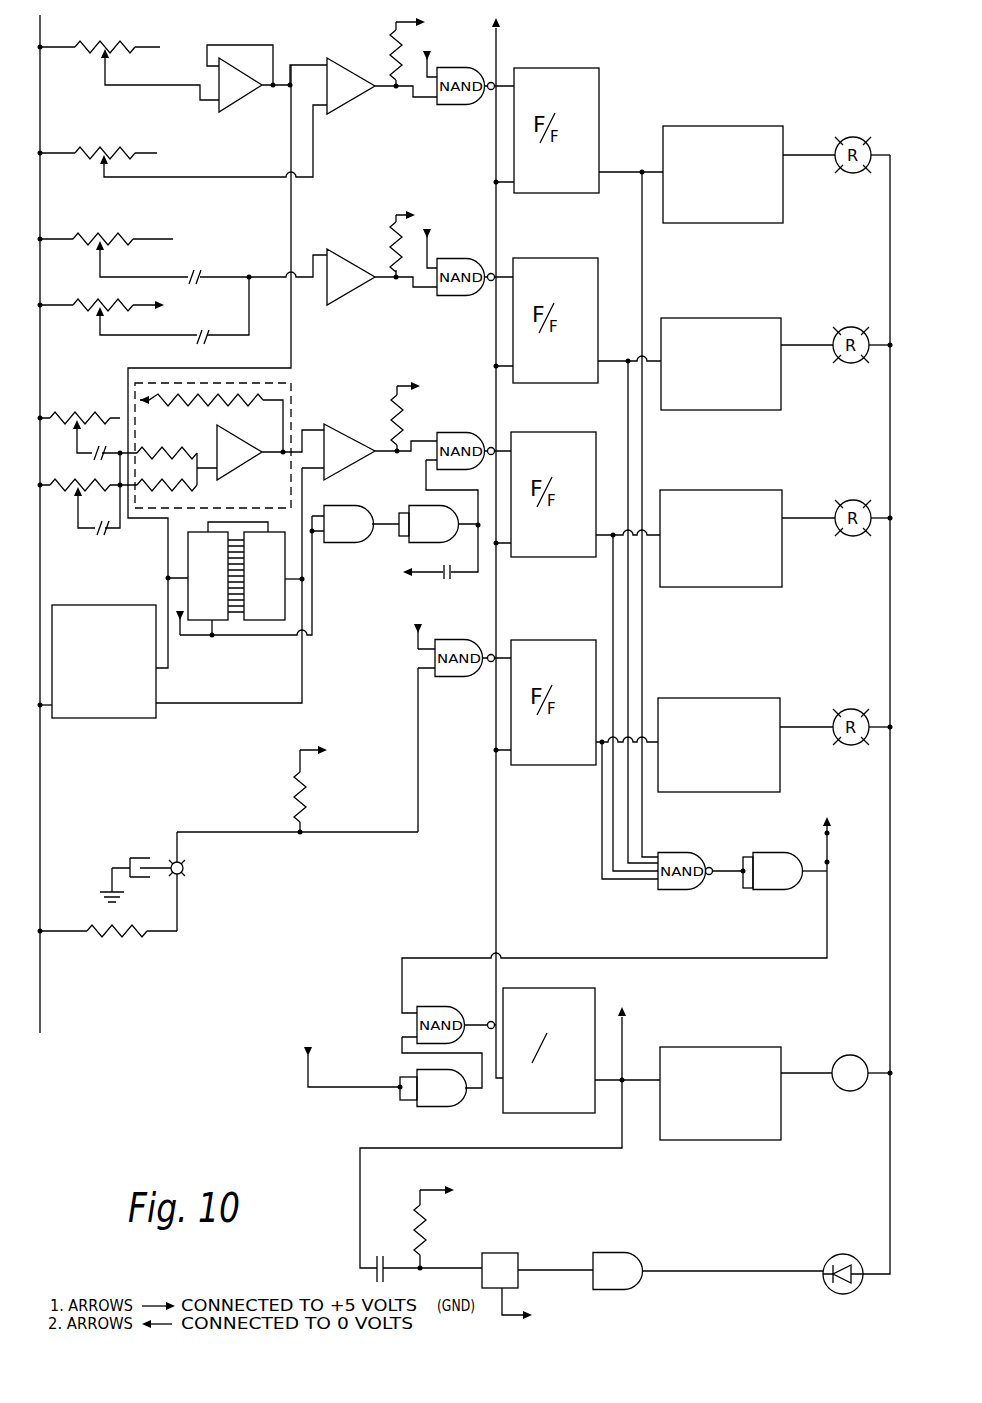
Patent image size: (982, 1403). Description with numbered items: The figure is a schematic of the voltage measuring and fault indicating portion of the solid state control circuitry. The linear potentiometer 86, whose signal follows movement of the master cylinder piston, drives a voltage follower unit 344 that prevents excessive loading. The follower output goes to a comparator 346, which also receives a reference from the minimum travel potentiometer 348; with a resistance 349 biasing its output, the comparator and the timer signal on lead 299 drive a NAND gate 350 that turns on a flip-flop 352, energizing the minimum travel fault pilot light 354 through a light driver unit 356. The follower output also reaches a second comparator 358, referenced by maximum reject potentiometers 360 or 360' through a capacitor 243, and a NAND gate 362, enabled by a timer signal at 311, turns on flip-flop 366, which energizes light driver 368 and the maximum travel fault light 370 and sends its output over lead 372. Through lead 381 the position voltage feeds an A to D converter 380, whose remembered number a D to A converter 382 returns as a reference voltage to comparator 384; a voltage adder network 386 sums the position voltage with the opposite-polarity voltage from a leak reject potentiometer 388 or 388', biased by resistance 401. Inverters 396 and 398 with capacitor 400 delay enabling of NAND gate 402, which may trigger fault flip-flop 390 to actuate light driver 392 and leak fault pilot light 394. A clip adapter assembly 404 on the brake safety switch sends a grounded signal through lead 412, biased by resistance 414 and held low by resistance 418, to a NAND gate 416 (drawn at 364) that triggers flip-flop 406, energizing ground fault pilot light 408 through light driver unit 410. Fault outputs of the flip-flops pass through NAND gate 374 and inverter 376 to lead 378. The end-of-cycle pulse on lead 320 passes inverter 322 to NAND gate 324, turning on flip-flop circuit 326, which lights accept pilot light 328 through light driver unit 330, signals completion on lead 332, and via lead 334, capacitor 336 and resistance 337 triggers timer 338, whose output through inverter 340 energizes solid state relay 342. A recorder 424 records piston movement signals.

The linear potentiometer 86 is at (118, 47).
The voltage follower unit 344 is at (234, 93).
The minimum travel potentiometer 348 is at (122, 152).
The resistance 349 is at (394, 52).
The comparator 346 is at (358, 100).
The lead 299 is at (433, 58).
The NAND gate 350 is at (458, 105).
The flip-flop 352 is at (600, 92).
The light driver unit 356 is at (727, 135).
The minimum travel fault pilot light 354 is at (853, 137).
The maximum reject potentiometer 360 is at (183, 244).
The capacitor 243 is at (201, 270).
The zero volt connection 311 is at (433, 253).
The flip-flop circuit 366 is at (551, 262).
The second comparator 358 is at (357, 292).
The NAND gate 362 is at (465, 297).
The light driver 368 is at (725, 326).
The maximum travel fault light 370 is at (846, 328).
The maximum reject potentiometer 360' is at (144, 306).
The lead 381 is at (293, 322).
The voltage adder network 386 is at (295, 391).
The leak reject potentiometer 388 is at (88, 416).
The leak reject potentiometer 388' is at (88, 510).
The resistor 401 is at (394, 405).
The NAND gate 402 is at (447, 433).
The fault flip-flop 390 is at (535, 440).
The lead 372 is at (626, 390).
The comparator 384 is at (347, 455).
The A to D converter 380 is at (198, 540).
The D to A converter 382 is at (270, 535).
The light driver 392 is at (705, 502).
The leak fault pilot light 394 is at (847, 500).
The inverter 396 is at (341, 542).
The inverter 398 is at (422, 530).
The capacitor 400 is at (438, 576).
The NAND gate 364 is at (432, 647).
The flip-flop 406 is at (540, 655).
The NAND gate 416 is at (455, 678).
The light driver unit 410 is at (700, 706).
The ground fault pilot light 408 is at (848, 710).
The recorder 424 is at (88, 720).
The lead 412 is at (253, 832).
The resistance 414 is at (305, 800).
The clip adapter assembly 404 is at (184, 868).
The resistance 418 is at (122, 938).
The NAND gate 374 is at (683, 855).
The inverter 376 is at (780, 860).
The lead 378 is at (830, 843).
The lead 320 is at (312, 1068).
The NAND gate 324 is at (430, 1007).
The flip-flop circuit 326 is at (575, 1003).
The lead 332 is at (626, 1036).
The light driver unit 330 is at (725, 1052).
The accept pilot light 328 is at (852, 1055).
The inverter 322 is at (437, 1105).
The lead 334 is at (618, 1124).
The capacitor 336 is at (381, 1252).
The resistance 337 is at (430, 1229).
The timer 338 is at (505, 1258).
The inverter 340 is at (622, 1266).
The solid state relay 342 is at (845, 1262).